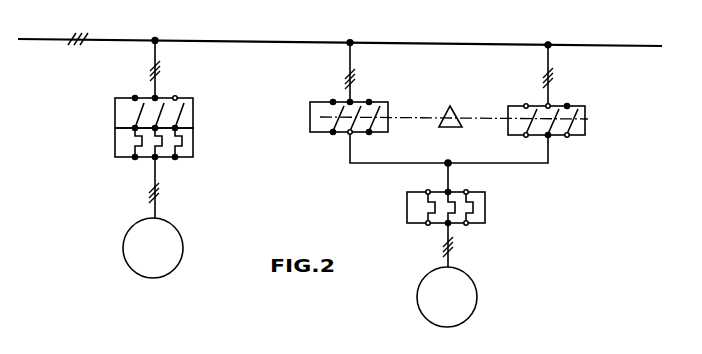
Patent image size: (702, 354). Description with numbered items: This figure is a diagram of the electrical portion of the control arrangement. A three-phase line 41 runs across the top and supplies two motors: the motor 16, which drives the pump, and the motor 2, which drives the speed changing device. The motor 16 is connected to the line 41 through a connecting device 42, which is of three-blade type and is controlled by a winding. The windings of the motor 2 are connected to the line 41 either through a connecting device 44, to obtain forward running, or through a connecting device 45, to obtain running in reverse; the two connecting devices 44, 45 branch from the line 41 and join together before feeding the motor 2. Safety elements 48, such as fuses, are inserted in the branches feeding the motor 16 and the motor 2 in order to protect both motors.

The three-phase line 41 is at (222, 41).
The connecting device 42 is at (186, 118).
The safety elements 48 is at (193, 150).
The motor 16 is at (176, 270).
The connecting device 44 is at (373, 125).
The connecting device 45 is at (570, 128).
The motor 2 is at (476, 300).